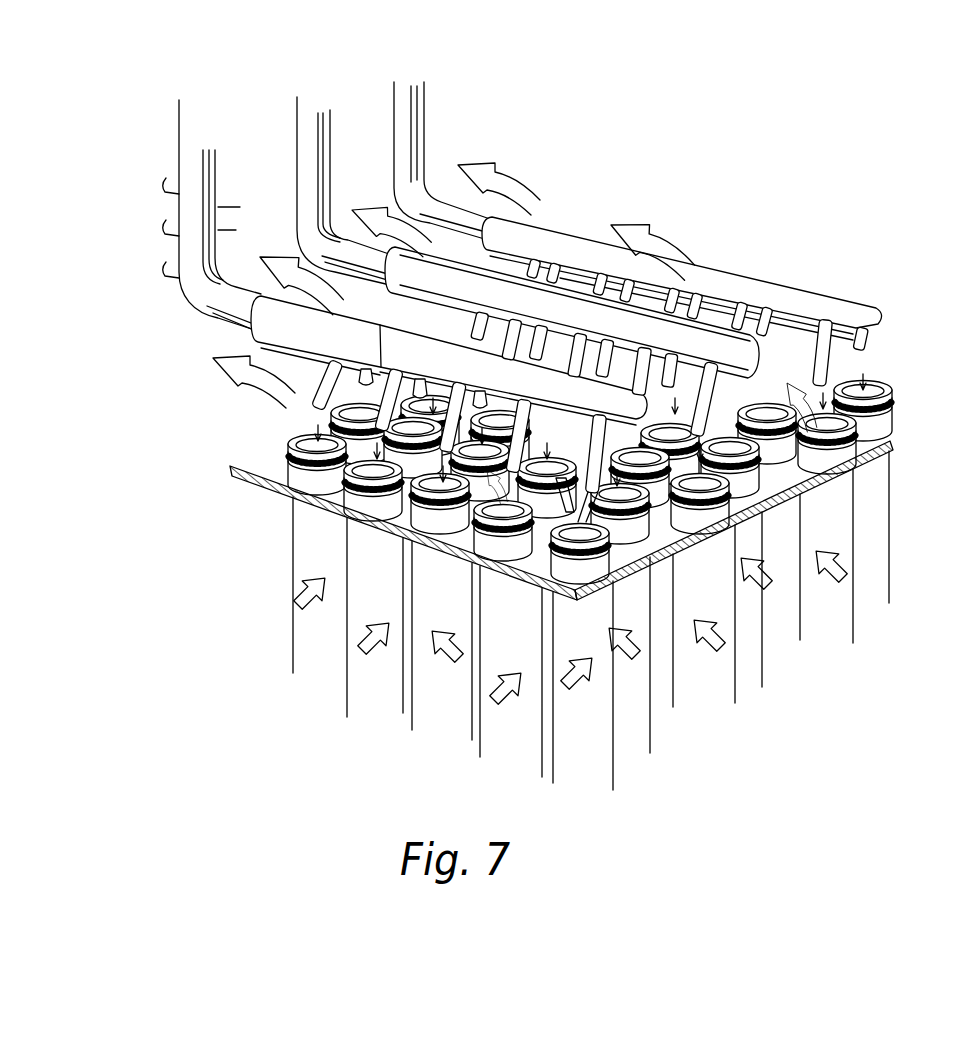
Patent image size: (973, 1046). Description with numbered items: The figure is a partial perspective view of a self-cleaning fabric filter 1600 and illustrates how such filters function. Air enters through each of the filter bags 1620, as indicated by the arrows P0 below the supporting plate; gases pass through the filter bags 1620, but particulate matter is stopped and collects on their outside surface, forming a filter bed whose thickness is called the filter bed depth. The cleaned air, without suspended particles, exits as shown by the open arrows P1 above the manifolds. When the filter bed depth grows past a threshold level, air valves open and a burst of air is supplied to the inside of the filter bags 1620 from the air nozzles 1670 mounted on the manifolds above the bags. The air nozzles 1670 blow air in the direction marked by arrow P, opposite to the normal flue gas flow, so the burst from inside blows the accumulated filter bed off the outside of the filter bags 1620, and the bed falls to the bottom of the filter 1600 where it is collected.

The filter 1600 is at (643, 170).
The air nozzles 1670 is at (640, 377).
The filter bags 1620 is at (360, 553).
The open arrows P1 is at (232, 370).
The arrow P is at (317, 421).
The exhaust pressure P0 is at (358, 685).